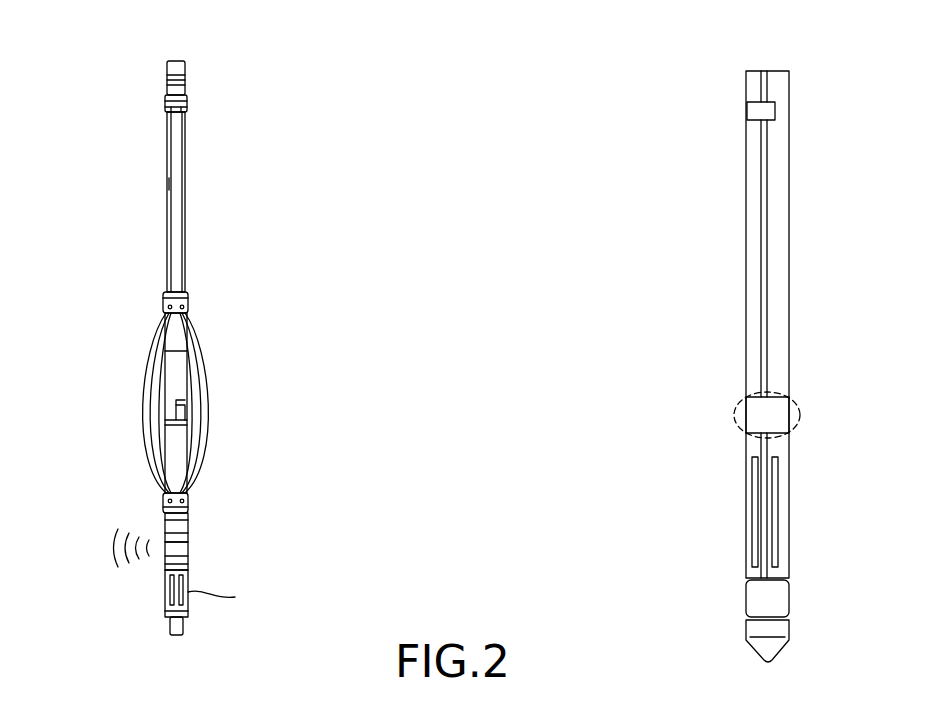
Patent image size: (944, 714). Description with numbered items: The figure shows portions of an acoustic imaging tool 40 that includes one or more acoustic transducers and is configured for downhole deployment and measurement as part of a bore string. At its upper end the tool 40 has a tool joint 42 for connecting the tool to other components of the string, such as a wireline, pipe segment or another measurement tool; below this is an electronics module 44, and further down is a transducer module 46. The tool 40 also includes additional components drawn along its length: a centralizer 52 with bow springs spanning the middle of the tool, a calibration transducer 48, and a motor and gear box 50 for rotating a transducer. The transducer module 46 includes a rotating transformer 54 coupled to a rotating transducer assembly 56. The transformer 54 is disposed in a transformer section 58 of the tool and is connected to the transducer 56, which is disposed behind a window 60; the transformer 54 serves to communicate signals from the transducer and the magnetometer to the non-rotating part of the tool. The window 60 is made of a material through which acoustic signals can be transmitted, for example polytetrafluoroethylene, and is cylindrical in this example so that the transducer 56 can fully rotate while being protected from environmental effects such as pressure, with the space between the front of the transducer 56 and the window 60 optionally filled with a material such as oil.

The acoustic imaging tool 40 is at (479, 30).
The tool joint 42 is at (185, 88).
The electronics module 44 is at (425, 180).
The transducer module 46 is at (718, 70).
The calibration transducer 48 is at (577, 405).
The motor and gear box 50 is at (550, 452).
The centralizer 52 is at (552, 347).
The rotating transformer 54 is at (572, 528).
The rotating transducer assembly 56 is at (555, 567).
The transformer section 58 is at (790, 337).
The window 60 is at (757, 415).